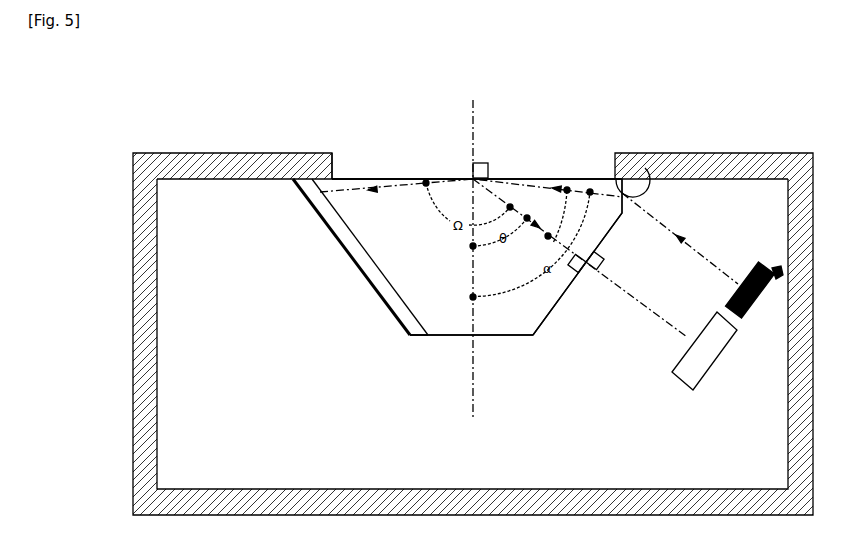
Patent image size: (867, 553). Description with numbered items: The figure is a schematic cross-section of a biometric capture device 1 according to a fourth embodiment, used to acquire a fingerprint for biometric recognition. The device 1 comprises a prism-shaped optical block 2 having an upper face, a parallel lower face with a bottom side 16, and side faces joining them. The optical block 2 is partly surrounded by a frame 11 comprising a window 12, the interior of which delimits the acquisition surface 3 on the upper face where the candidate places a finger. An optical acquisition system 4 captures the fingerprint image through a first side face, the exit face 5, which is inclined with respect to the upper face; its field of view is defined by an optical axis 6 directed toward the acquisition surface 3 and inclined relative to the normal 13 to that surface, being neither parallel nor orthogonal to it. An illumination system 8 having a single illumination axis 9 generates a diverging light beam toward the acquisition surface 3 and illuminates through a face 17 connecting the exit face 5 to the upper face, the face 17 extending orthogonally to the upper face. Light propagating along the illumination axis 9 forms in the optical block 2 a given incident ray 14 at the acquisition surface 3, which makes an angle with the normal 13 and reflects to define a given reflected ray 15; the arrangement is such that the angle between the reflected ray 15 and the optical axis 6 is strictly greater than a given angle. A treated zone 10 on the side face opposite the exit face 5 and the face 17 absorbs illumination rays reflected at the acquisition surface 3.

The biometric capture device 1 is at (96, 315).
The optical block 2 is at (410, 198).
The acquisition surface 3 is at (597, 178).
The optical acquisition system 4 is at (710, 362).
The exit face 5 is at (545, 335).
The optical axis 6 is at (645, 305).
The illumination system 8 is at (765, 262).
The illumination axis 9 is at (720, 267).
The treated zone 10 is at (365, 270).
The frame 11 is at (143, 197).
The window 12 is at (334, 168).
The normal 13 is at (475, 110).
The given incident ray 14 is at (537, 178).
The given reflected ray 15 is at (437, 178).
The bottom side 16 is at (443, 337).
The face 17 is at (641, 163).